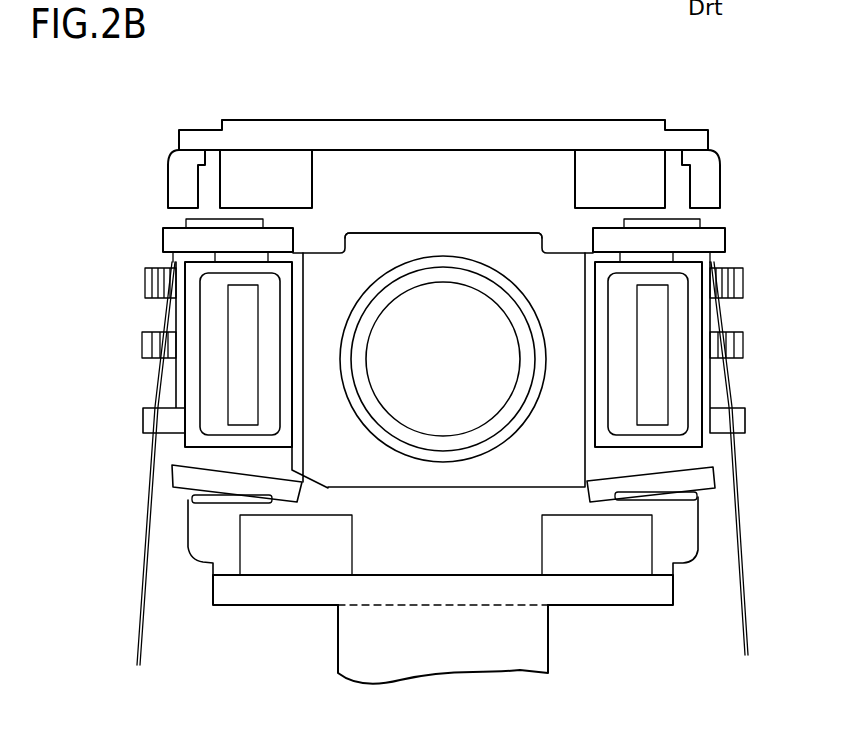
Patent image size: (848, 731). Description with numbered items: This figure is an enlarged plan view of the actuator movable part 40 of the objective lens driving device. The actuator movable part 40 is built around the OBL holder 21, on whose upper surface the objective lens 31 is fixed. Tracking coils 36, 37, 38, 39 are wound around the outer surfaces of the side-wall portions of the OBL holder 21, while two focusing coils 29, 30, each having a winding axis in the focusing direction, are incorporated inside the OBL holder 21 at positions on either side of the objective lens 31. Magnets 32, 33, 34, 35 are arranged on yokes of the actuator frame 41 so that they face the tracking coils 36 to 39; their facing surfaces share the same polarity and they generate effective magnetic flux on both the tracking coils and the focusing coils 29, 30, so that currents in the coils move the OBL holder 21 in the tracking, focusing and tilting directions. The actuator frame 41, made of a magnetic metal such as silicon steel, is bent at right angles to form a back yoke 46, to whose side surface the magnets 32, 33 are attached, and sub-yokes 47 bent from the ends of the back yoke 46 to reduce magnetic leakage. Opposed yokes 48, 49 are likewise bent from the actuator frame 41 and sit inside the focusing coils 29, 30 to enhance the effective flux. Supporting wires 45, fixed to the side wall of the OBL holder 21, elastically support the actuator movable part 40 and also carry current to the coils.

The OBL holder 21 is at (443, 248).
The focusing coil 29 is at (700, 390).
The focusing coil 30 is at (187, 385).
The objective lens 31 is at (443, 359).
The magnet 32 is at (262, 155).
The magnet 33 is at (640, 155).
The magnet 34 is at (585, 560).
The magnet 35 is at (250, 565).
The tracking coil 36 is at (162, 245).
The tracking coil 37 is at (722, 245).
The tracking coil 38 is at (720, 481).
The tracking coil 39 is at (170, 480).
The actuator movable part 40 is at (384, 214).
The actuator frame 41 is at (720, 147).
The supporting wire 45 is at (747, 590).
The back yoke 46 is at (428, 130).
The sub-yoke 47 is at (165, 170).
The opposed yoke 48 is at (652, 323).
The opposed yoke 49 is at (235, 312).